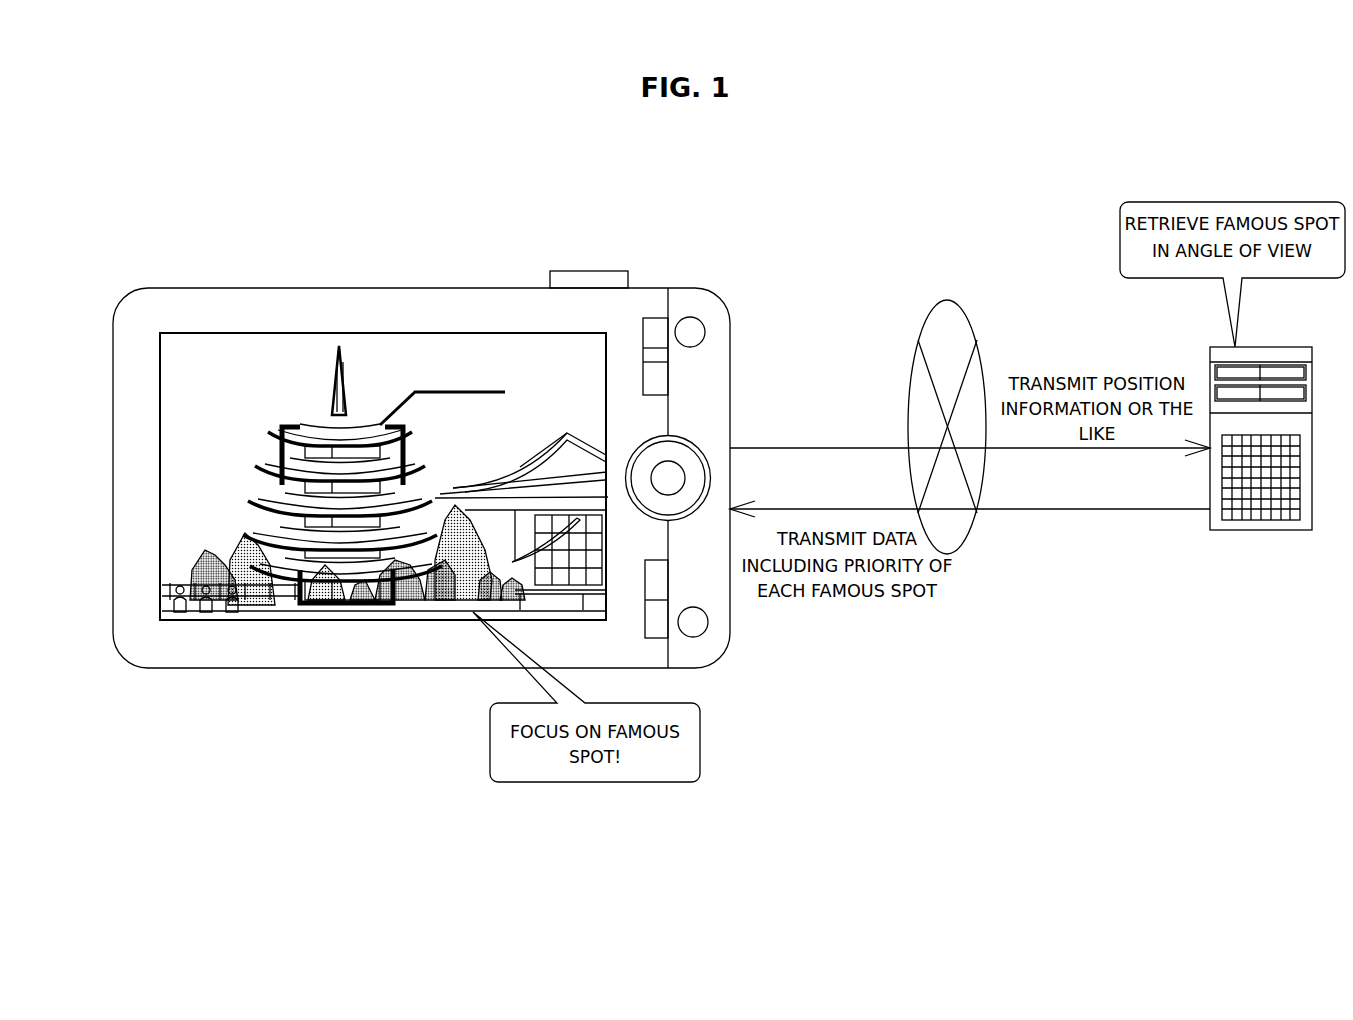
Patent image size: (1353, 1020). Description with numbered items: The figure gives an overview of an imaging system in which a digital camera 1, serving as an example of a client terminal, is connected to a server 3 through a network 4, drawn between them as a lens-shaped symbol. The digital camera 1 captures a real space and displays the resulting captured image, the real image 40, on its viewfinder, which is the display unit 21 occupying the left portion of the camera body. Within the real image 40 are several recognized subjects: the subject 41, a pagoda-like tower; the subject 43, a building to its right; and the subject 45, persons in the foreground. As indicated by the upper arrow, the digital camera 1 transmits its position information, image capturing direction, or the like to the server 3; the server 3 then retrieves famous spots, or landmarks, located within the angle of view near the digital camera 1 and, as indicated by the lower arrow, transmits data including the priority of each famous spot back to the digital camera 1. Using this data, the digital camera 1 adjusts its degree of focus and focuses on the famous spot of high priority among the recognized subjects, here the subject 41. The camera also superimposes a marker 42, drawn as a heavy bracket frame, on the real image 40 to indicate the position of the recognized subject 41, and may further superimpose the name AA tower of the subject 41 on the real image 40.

The digital camera 1 is at (418, 287).
The server 3 is at (1258, 345).
The network 4 is at (945, 300).
The display unit 21 is at (160, 478).
The real image 40 is at (178, 348).
The subject 41 is at (372, 420).
The marker 42 is at (330, 403).
The subject 43 is at (530, 465).
The subject 45 is at (162, 608).